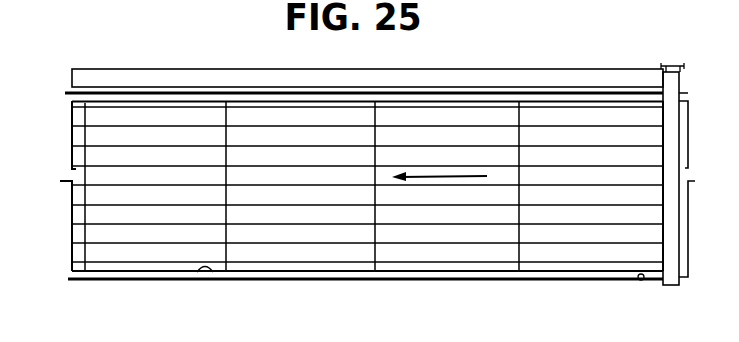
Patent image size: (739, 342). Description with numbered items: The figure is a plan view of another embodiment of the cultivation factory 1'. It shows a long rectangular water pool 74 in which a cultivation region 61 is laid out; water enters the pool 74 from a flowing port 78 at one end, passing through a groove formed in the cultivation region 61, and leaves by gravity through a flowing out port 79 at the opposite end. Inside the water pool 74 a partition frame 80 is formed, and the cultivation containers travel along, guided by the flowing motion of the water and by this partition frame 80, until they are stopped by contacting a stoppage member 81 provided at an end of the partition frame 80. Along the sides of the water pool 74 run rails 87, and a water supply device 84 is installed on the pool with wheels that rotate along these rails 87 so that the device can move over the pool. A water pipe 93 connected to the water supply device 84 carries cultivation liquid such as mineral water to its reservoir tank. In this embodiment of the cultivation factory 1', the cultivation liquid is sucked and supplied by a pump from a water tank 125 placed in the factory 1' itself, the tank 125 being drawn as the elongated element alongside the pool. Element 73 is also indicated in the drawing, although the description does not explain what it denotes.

The water tank 125 is at (163, 82).
The partition frame 80 is at (247, 118).
The rails 87 is at (375, 93).
The cultivation factory 1' is at (367, 153).
The water supply device 84 is at (654, 113).
The water pipe 93 is at (668, 66).
The flowing out port 79 is at (68, 170).
The flowing port 78 is at (689, 168).
The stoppage member 81 is at (88, 252).
The bottom tube 73 is at (167, 252).
The water pool 74 is at (213, 272).
The cultivation region 61 is at (307, 250).